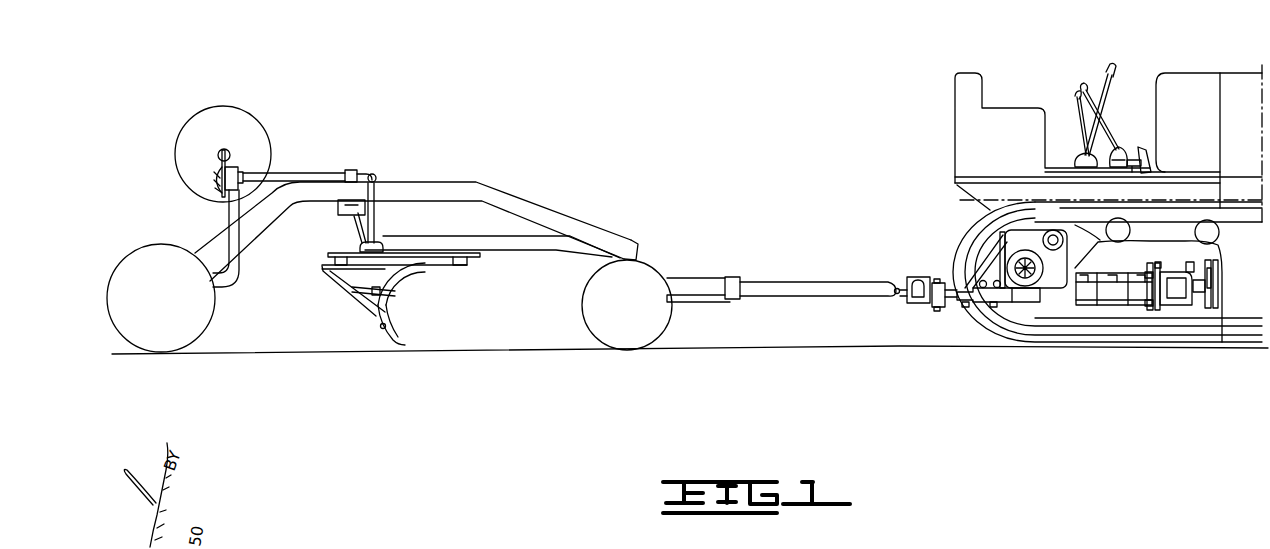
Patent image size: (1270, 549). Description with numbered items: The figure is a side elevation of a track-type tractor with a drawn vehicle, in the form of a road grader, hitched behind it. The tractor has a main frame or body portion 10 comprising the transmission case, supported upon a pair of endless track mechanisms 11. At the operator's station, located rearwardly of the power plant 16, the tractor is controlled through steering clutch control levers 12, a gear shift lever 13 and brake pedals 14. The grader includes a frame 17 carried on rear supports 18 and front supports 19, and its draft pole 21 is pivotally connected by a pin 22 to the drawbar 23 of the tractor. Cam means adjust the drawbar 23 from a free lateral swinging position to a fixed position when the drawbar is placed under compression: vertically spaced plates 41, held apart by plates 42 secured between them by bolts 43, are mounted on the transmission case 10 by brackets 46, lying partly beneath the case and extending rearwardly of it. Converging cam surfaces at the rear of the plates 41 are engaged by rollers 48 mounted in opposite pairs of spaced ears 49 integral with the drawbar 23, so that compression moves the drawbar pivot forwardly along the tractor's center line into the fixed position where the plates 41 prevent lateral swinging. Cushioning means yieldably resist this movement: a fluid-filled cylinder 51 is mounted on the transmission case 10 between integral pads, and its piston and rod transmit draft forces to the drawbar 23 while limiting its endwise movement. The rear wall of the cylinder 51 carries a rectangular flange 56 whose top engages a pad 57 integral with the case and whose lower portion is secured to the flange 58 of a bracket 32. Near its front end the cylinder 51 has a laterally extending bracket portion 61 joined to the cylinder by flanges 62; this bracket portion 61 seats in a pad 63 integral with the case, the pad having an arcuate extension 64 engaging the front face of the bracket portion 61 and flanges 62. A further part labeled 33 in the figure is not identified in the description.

The main frame or body portion 10 is at (1032, 250).
The endless track mechanisms 11 is at (975, 210).
The steering clutch control levers 12 is at (1103, 90).
The gear shift lever 13 is at (1107, 120).
The brake pedals 14 is at (1138, 150).
The power plant 16 is at (1242, 80).
The frame 17 is at (495, 193).
The rear supports 18 is at (207, 321).
The front supports 19 is at (662, 323).
The draft pole 21 is at (772, 255).
The pin 22 is at (912, 273).
The drawbar 23 is at (945, 283).
The bracket 32 is at (1088, 303).
The hitch bar 33 is at (1108, 268).
The plates 41 is at (1015, 303).
The plates 42 is at (965, 308).
The bolts 43 is at (993, 308).
The brackets 46 is at (983, 257).
The rollers 48 is at (927, 311).
The ears 49 is at (932, 320).
The cylinder 51 is at (1172, 298).
The rectangular flange 56 is at (1158, 308).
The pad 57 is at (1157, 267).
The flange 58 is at (1152, 306).
The bracket portion 61 is at (1190, 286).
The flanges 62 is at (1196, 292).
The pad 63 is at (1192, 267).
The arcuate extension 64 is at (1209, 277).